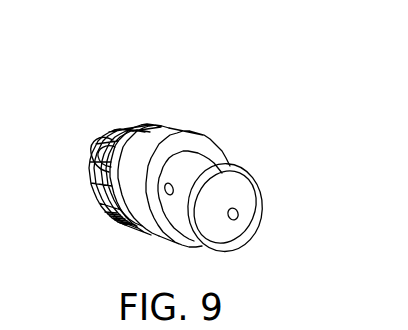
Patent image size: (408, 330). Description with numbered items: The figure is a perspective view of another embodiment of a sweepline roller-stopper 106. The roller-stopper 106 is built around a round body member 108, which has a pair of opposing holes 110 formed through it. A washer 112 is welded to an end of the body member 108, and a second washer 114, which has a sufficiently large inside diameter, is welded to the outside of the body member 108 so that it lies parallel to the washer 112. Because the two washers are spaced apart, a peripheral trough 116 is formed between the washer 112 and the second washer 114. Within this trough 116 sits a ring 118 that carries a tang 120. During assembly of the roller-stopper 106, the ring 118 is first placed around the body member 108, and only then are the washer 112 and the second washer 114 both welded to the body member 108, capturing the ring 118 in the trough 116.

The roller-stopper 106 is at (217, 100).
The body member 108 is at (231, 167).
The holes 110 is at (170, 196).
The washer 112 is at (96, 200).
The second washer 114 is at (192, 134).
The peripheral trough 116 is at (126, 130).
The ring 118 is at (141, 137).
The tang 120 is at (92, 170).